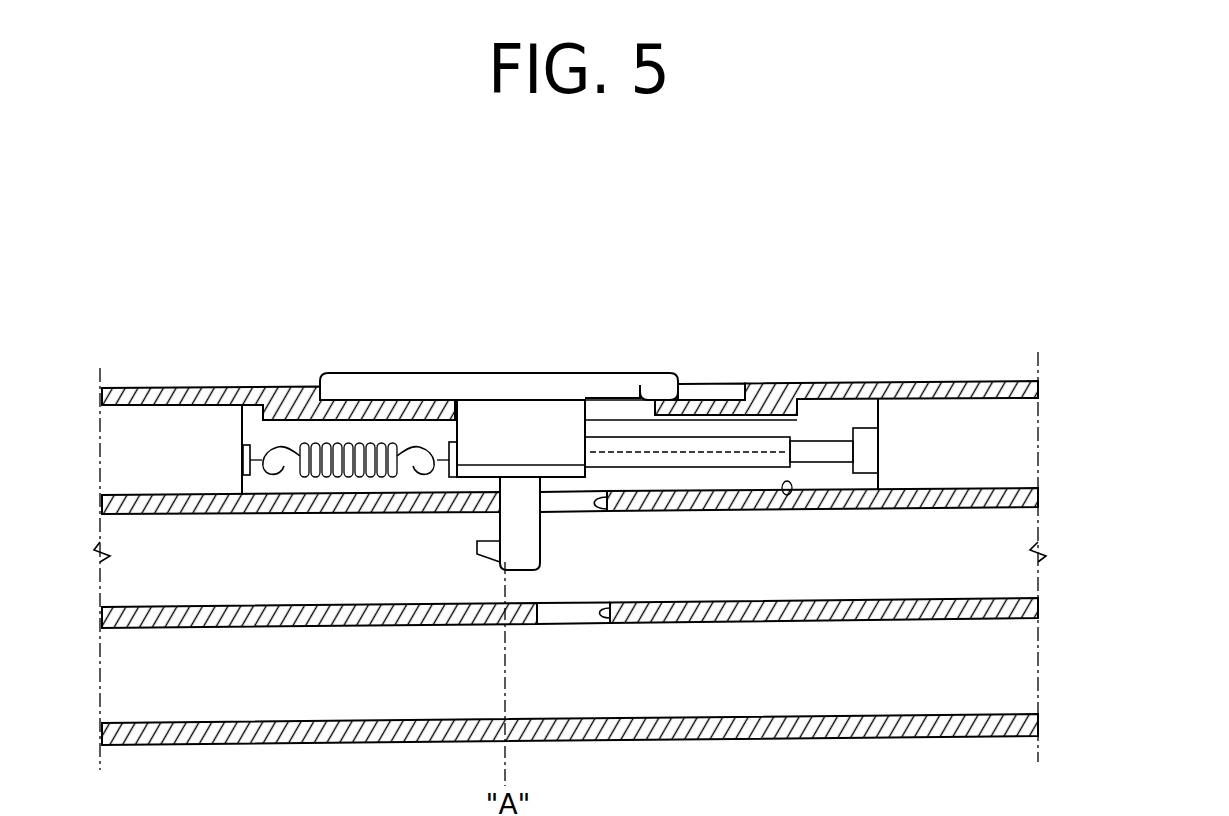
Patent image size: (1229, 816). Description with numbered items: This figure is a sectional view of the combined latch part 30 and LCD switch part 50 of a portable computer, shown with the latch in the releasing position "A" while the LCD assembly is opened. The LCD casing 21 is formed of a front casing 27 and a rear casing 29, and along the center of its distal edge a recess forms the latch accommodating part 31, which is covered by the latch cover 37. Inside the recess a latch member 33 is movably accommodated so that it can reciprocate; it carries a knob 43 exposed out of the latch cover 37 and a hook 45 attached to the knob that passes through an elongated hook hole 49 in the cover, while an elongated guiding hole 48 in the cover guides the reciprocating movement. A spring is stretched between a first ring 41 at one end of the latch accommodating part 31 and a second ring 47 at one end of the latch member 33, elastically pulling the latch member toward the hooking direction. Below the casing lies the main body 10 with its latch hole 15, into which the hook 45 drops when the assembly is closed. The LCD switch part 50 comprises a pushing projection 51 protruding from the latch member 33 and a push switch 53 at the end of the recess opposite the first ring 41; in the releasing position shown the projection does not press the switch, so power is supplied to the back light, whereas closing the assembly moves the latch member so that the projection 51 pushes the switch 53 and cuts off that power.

The main body 10 is at (526, 679).
The latch hole 15 is at (594, 620).
The LCD casing 21 is at (657, 405).
The front casing 27 is at (623, 508).
The rear casing 29 is at (1040, 384).
The latch part 30 is at (559, 415).
The latch accommodating part 31 is at (787, 496).
The latch member 33 is at (501, 454).
The latch cover 37 is at (958, 383).
The first ring 41 is at (252, 458).
The knob 43 is at (523, 373).
The hook 45 is at (546, 555).
The second ring 47 is at (444, 452).
The guiding hole 48 is at (648, 398).
The hook hole 49 is at (600, 510).
The LCD switch part 50 is at (735, 352).
The pushing projection 51 is at (764, 432).
The push switch 53 is at (846, 426).